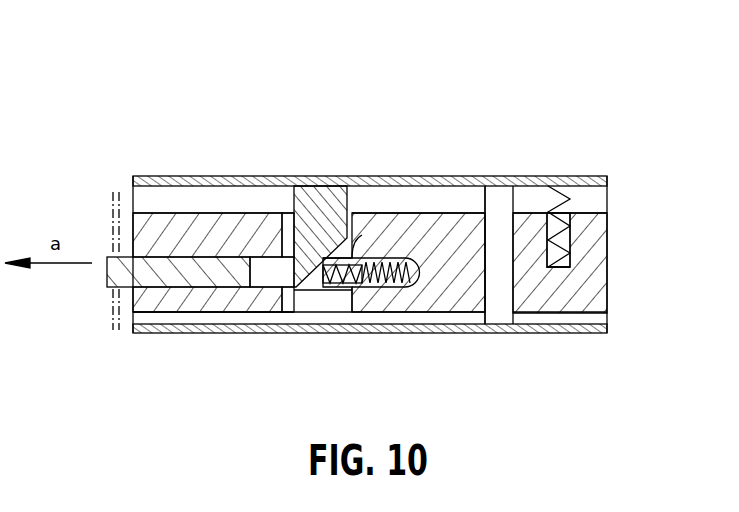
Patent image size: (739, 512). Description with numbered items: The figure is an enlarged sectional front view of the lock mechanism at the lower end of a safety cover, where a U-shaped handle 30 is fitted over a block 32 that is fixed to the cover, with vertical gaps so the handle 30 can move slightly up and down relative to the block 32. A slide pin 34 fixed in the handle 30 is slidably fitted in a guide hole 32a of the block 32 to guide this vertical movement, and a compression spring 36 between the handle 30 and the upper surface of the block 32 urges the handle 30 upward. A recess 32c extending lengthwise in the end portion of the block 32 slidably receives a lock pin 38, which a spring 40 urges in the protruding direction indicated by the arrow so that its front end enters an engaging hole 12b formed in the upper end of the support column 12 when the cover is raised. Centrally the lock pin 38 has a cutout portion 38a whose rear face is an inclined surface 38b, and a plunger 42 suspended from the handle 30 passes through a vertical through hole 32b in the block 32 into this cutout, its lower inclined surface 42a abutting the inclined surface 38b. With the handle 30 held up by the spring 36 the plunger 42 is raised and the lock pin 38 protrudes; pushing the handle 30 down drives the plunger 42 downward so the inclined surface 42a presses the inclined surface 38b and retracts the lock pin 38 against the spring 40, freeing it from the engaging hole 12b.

The support column 12 is at (112, 214).
The engaging hole 12b is at (107, 268).
The handle 30 is at (477, 186).
The block 32 is at (555, 283).
The guide hole 32a is at (492, 262).
The through hole 32b is at (345, 293).
The recess 32c is at (177, 288).
The slide pin 34 is at (500, 303).
The compression spring 36 is at (583, 187).
The lock pin 38 is at (190, 258).
The cutout portion 38a is at (267, 270).
The inclined surface 38b is at (301, 288).
The spring 40 is at (407, 253).
The plunger 42 is at (313, 200).
The inclined surface 42a is at (370, 235).